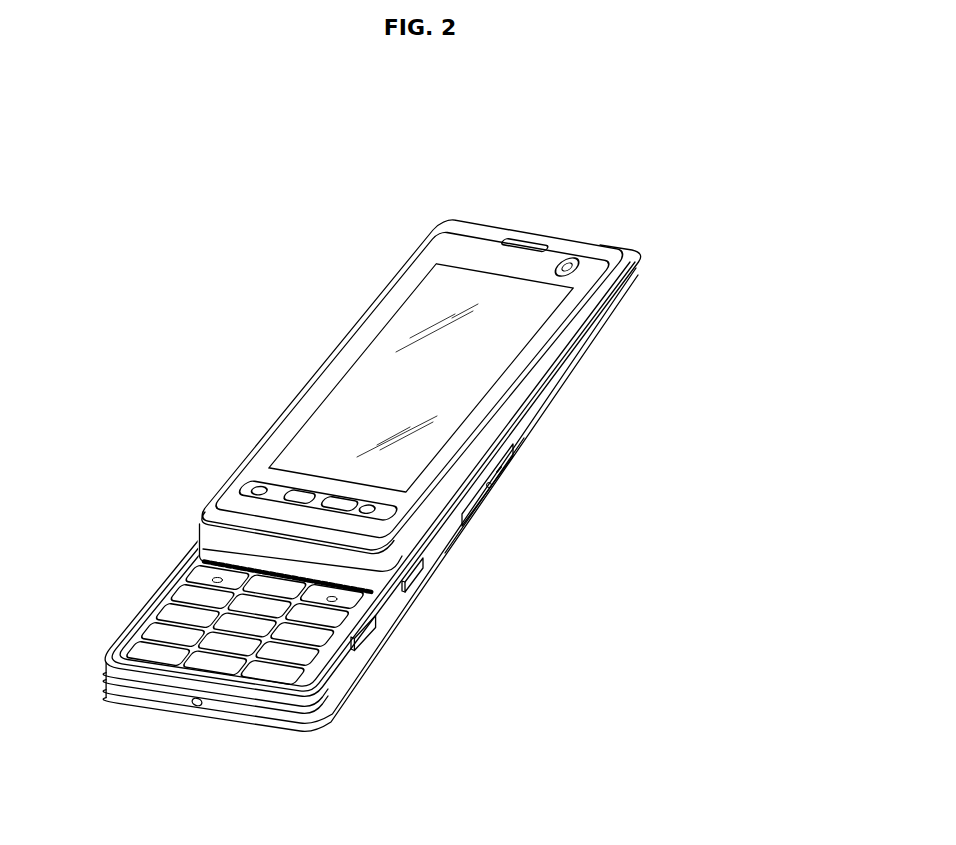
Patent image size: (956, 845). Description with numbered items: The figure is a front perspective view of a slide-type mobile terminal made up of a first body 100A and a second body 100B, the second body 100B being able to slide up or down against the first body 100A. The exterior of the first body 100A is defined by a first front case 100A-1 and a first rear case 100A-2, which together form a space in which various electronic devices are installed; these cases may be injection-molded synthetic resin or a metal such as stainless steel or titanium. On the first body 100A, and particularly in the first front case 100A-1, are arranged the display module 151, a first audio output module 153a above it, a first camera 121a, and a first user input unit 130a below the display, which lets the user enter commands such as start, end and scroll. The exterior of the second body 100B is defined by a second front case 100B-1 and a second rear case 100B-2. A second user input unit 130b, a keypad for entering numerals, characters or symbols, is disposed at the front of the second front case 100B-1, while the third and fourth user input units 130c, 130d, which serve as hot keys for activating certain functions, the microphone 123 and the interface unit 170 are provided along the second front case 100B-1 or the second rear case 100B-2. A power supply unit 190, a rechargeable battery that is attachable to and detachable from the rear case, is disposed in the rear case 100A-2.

The first body 100A is at (450, 366).
The second body 100B is at (369, 519).
The first front case 100A-1 is at (588, 285).
The first rear case 100A-2 is at (630, 266).
The second front case 100B-1 is at (548, 402).
The second rear case 100B-2 is at (533, 437).
The display module 151 is at (413, 317).
The first audio output module 153a is at (520, 243).
The first camera 121a is at (574, 263).
The first user input unit 130a is at (247, 487).
The second user input unit 130b is at (148, 602).
The third user input unit 130c is at (421, 582).
The fourth user input unit 130d is at (378, 630).
The interface unit 170 is at (494, 493).
The power supply unit 190 is at (448, 553).
The microphone 123 is at (199, 708).